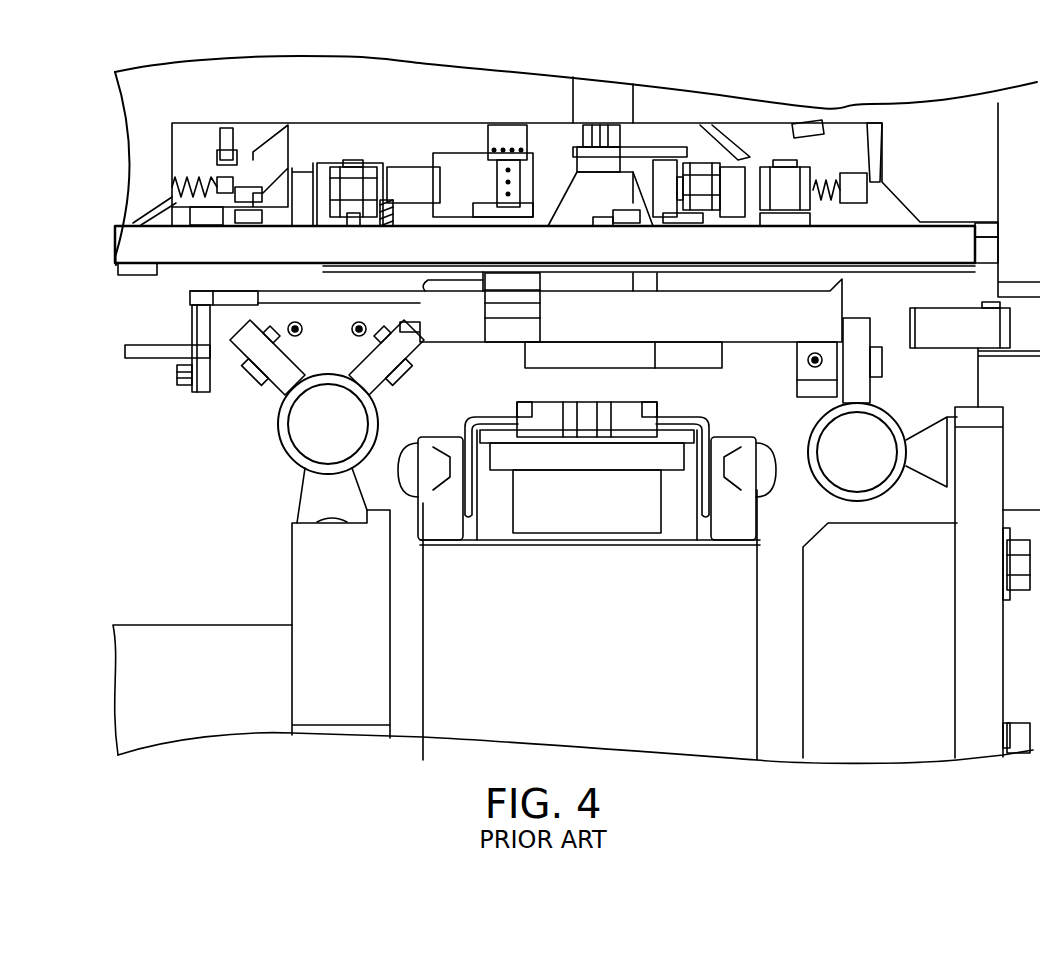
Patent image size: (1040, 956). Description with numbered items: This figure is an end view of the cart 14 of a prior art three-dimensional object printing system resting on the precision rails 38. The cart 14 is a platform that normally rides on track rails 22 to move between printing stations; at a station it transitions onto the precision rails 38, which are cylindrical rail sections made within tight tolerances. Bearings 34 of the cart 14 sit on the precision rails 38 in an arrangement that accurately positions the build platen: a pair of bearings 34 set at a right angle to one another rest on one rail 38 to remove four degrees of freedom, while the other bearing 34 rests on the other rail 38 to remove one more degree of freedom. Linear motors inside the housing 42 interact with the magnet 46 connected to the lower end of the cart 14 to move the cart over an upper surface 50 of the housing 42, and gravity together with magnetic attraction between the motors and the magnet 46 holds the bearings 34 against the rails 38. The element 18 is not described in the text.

The platform 14 is at (883, 152).
The spring clip 18 is at (467, 413).
The track rails 22 is at (437, 475).
The bearings 34 is at (264, 346).
The precision rails 38 is at (284, 448).
The housing 42 is at (697, 742).
The magnet 46 is at (543, 523).
The upper surface 50 is at (584, 552).